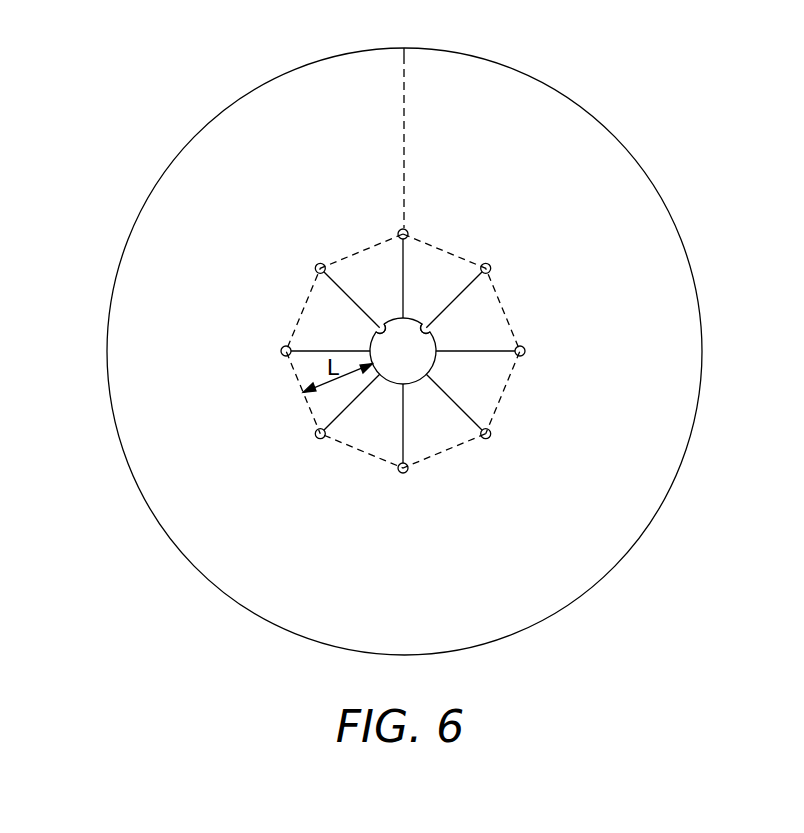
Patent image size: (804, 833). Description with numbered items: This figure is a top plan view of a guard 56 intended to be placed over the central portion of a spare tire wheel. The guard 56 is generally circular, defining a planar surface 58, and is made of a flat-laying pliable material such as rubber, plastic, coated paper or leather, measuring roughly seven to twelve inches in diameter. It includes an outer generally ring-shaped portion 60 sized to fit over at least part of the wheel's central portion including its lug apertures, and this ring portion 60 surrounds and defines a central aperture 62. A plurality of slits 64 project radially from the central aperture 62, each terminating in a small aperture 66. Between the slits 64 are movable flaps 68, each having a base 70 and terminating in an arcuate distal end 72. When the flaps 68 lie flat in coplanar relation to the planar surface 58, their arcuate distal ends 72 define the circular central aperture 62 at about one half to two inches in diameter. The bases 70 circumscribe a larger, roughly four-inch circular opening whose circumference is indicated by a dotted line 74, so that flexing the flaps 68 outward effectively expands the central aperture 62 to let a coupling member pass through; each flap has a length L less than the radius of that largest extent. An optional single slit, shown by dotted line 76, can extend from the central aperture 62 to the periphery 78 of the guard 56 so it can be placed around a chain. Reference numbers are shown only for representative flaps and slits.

The guard 56 is at (107, 112).
The planar surface 58 is at (585, 191).
The outer ring-shaped portion 60 is at (118, 333).
The central aperture 62 is at (404, 337).
The slits 64 is at (313, 352).
The small aperture 66 is at (280, 352).
The flaps 68 is at (303, 368).
The base 70 is at (310, 410).
The arcuate distal end 72 is at (381, 328).
The dotted line 74 is at (316, 272).
The dotted line 76 is at (405, 100).
The periphery 78 is at (405, 48).